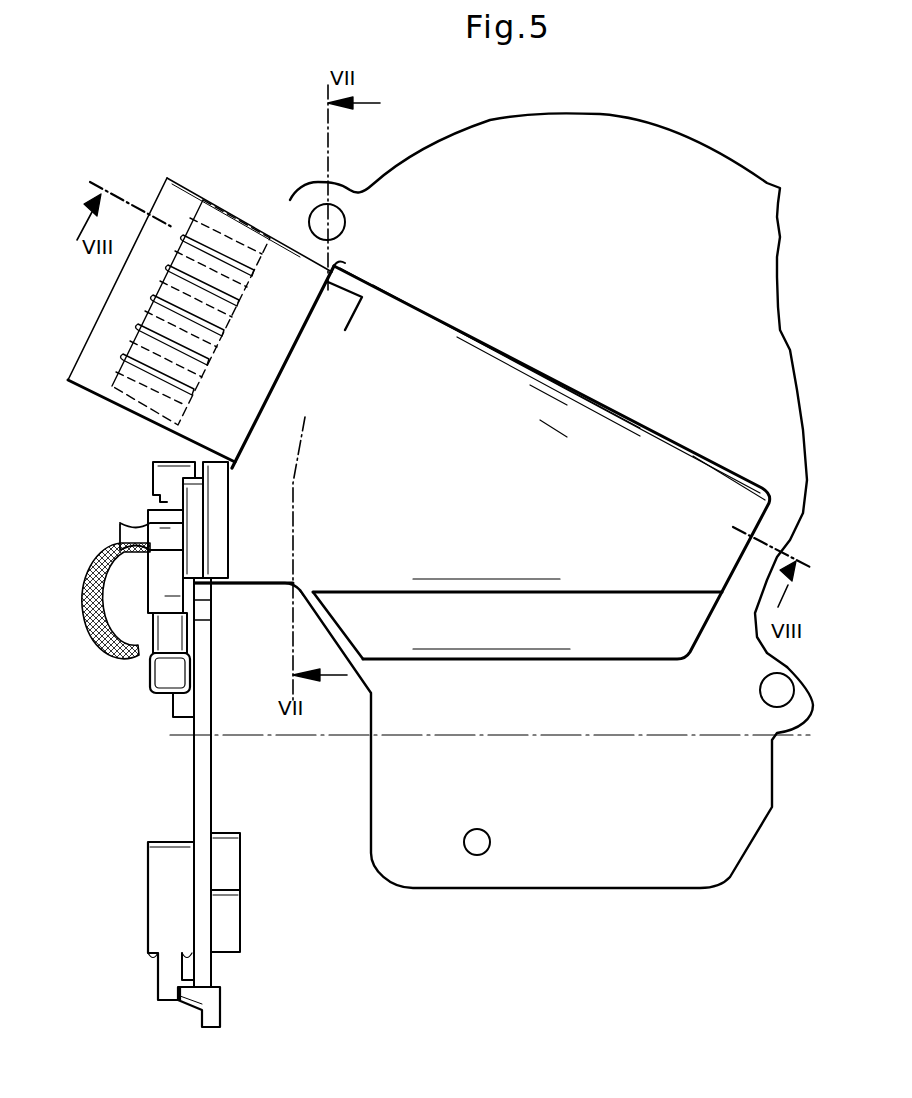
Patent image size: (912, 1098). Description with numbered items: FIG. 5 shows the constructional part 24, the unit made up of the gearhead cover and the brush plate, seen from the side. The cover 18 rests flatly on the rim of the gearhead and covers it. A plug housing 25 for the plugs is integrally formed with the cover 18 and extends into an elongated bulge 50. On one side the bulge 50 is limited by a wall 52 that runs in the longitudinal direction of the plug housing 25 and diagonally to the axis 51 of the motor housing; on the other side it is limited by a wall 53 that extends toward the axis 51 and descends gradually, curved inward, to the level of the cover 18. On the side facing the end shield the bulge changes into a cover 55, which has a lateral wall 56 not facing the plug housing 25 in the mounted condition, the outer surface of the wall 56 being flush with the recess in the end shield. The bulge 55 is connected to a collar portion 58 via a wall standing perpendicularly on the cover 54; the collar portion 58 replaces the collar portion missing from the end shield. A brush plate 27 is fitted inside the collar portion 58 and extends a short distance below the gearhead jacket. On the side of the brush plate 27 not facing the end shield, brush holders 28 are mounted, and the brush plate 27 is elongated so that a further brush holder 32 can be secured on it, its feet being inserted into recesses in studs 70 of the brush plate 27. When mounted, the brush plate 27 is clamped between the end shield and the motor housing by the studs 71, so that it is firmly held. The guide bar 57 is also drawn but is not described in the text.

The cover 18 is at (713, 177).
The constructional part 24 is at (738, 885).
The plug housing 25 is at (224, 232).
The brush plate 27 is at (200, 928).
The brush holders 28 is at (158, 588).
The brush holder 32 is at (162, 902).
The elongated bulge 50 is at (708, 436).
The axis of the motor housing 51 is at (804, 735).
The wall 52 is at (624, 405).
The wall 53 is at (661, 645).
The cover 54 is at (524, 508).
The cover (bulge) 55 is at (250, 600).
The lateral wall 56 is at (268, 587).
The guide bar 57 is at (222, 517).
The collar portion 58 is at (212, 460).
The studs 70 is at (228, 908).
The studs 71 is at (185, 713).